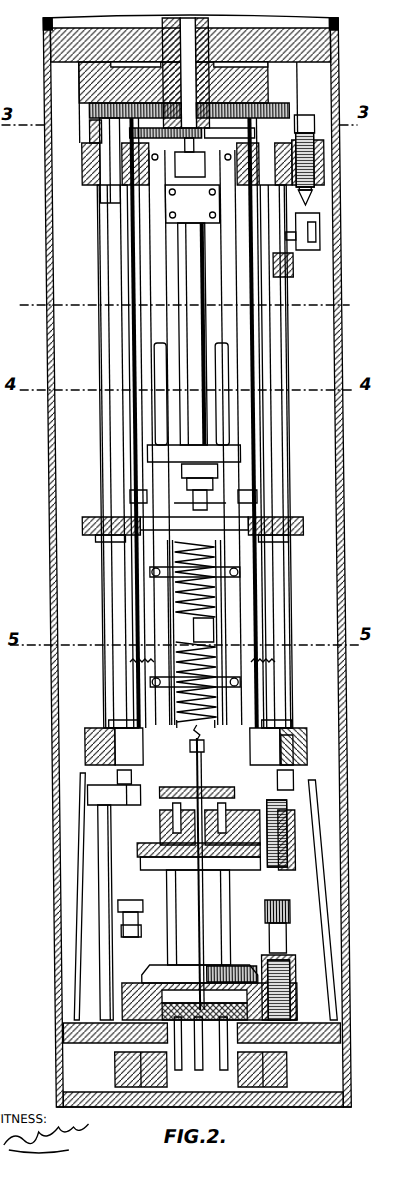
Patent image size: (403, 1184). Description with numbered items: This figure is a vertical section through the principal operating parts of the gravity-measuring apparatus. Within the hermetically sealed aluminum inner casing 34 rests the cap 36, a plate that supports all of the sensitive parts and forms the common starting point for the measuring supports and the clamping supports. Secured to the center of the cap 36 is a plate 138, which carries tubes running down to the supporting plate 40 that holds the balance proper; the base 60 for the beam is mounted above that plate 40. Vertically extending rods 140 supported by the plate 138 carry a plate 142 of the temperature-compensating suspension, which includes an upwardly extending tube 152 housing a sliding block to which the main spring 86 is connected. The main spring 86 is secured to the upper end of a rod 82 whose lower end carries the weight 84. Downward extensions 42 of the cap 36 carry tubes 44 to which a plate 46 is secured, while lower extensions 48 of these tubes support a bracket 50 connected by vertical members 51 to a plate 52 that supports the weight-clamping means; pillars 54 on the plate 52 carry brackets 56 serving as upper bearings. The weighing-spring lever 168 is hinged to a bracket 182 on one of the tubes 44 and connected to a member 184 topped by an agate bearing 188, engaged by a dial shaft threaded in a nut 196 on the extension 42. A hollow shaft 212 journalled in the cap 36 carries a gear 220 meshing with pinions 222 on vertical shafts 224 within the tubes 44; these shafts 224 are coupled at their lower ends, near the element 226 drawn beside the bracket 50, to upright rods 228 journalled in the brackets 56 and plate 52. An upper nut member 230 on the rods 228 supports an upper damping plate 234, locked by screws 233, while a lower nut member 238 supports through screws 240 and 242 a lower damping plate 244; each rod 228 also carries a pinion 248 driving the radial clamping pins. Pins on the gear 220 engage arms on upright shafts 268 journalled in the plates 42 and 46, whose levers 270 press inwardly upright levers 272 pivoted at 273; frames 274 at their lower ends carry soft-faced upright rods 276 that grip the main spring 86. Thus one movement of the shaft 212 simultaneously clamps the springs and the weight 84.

The inner casing 34 is at (338, 440).
The cap 36 is at (52, 47).
The supporting plate 40 is at (245, 1085).
The downward extensions 42 is at (82, 160).
The tubes 44 is at (100, 333).
The plate 46 is at (82, 525).
The lower extensions 48 is at (100, 586).
The bracket 50 is at (85, 735).
The vertical members 51 is at (72, 850).
The plate 52 is at (330, 1025).
The pillars 54 is at (98, 912).
The brackets 56 is at (88, 792).
The base 60 is at (186, 881).
The rod 82 is at (187, 874).
The weight 84 is at (222, 880).
The main spring 86 is at (215, 588).
The plate 138 is at (120, 82).
The rods 140 is at (228, 355).
The plate 142 is at (150, 450).
The tube 152 is at (247, 334).
The lever 168 is at (329, 248).
The bracket 182 is at (290, 272).
The member 184 is at (318, 234).
The agate bearing 188 is at (312, 205).
The nut 196 is at (320, 176).
The hollow shaft 212 is at (185, 55).
The gear 220 is at (95, 137).
The pinions 222 is at (92, 108).
The vertical shafts 224 is at (104, 190).
The collar 226 is at (108, 775).
The upright rods 228 is at (203, 938).
The upper nut member 230 is at (290, 835).
The screws 233 is at (205, 787).
The upper damping plate 234 is at (150, 838).
The lower nut member 238 is at (300, 975).
The screws 240 is at (187, 1049).
The screws 242 is at (222, 1050).
The lower damping plate 244 is at (170, 130).
The pinion 248 is at (204, 919).
The upright shafts 268 is at (253, 368).
The levers 270 is at (130, 495).
The upright levers 272 is at (150, 260).
The pivot 273 is at (299, 674).
The frames 274 is at (197, 631).
The upright rods 276 is at (198, 726).